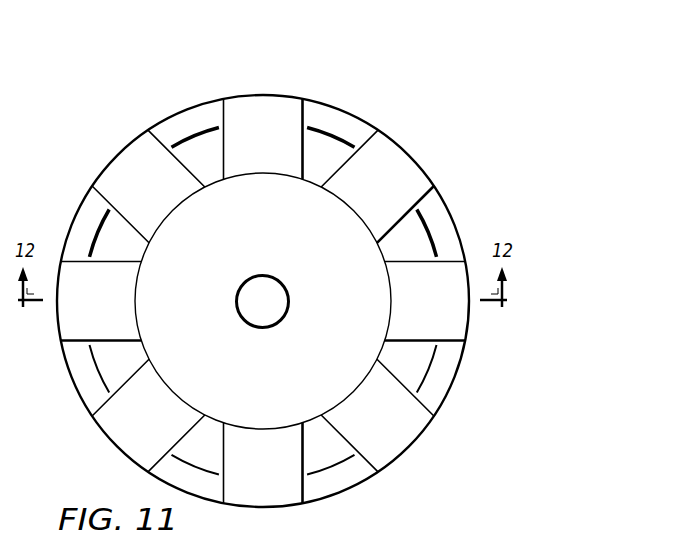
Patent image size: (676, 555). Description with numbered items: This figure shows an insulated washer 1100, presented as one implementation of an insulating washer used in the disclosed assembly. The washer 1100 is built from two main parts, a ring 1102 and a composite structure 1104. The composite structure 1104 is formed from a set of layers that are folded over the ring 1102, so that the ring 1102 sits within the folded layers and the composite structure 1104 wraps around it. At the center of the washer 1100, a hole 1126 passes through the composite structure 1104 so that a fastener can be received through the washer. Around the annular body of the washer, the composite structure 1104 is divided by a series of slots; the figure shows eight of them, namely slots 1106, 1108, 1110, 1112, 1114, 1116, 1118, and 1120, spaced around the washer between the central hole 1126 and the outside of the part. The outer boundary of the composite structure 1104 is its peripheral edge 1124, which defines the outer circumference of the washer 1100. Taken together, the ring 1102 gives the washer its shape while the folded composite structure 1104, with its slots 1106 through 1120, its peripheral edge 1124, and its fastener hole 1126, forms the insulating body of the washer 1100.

The washer 1100 is at (422, 97).
The ring 1102 is at (167, 130).
The composite structure 1104 is at (397, 430).
The slot 1106 is at (115, 235).
The slot 1108 is at (207, 148).
The slot 1110 is at (327, 158).
The slot 1112 is at (408, 237).
The slot 1114 is at (410, 362).
The slot 1116 is at (328, 445).
The slot 1118 is at (200, 443).
The slot 1120 is at (115, 362).
The peripheral edge 1124 is at (262, 107).
The hole 1126 is at (260, 302).